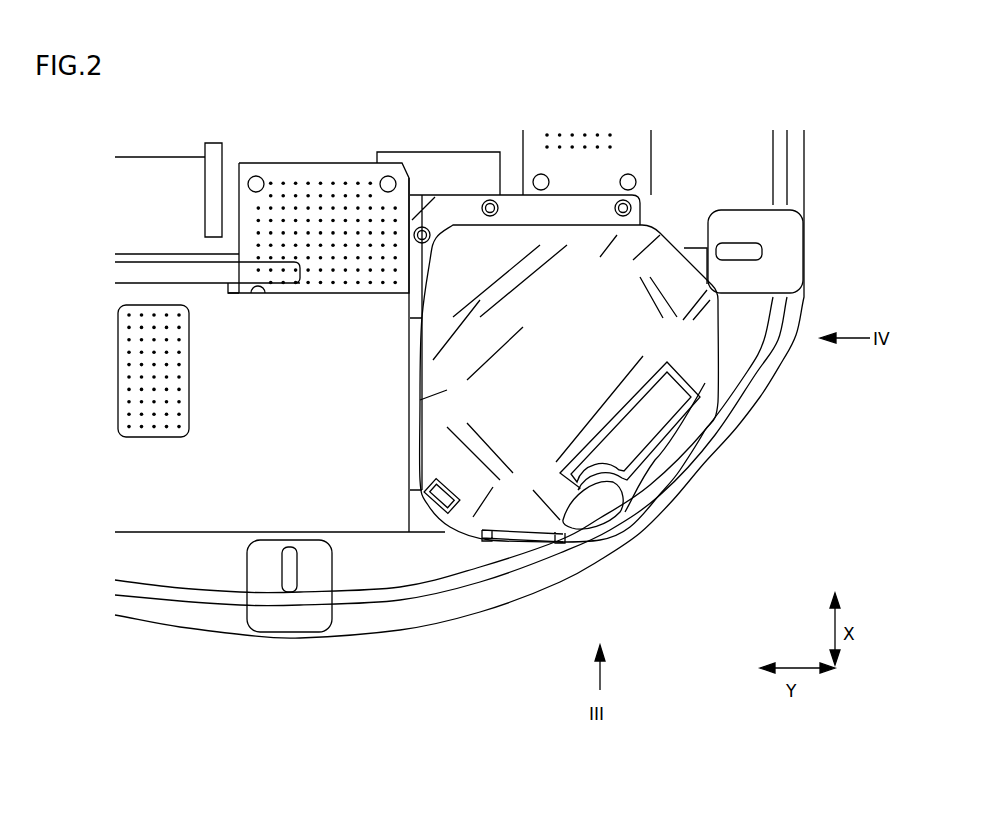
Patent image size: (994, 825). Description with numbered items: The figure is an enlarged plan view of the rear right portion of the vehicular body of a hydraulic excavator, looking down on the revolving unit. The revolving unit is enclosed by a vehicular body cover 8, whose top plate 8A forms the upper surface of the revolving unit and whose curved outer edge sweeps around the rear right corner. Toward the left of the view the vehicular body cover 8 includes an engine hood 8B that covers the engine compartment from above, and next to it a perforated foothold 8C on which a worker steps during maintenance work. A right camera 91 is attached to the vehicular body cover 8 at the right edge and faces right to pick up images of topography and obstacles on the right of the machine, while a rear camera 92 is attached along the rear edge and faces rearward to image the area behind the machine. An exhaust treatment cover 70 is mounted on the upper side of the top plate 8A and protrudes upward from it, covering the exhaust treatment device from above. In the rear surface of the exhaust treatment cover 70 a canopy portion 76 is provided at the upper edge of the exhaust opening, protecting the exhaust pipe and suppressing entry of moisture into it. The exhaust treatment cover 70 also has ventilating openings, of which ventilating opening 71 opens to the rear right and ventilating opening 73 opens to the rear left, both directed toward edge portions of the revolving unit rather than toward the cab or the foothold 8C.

The vehicular body cover 8 is at (193, 622).
The top plate 8A is at (375, 567).
The engine hood 8B is at (143, 482).
The foothold 8C is at (326, 186).
The exhaust treatment cover 70 is at (553, 292).
The ventilating opening 71 is at (648, 428).
The ventilating opening 73 is at (440, 505).
The canopy portion 76 is at (605, 513).
The right camera 91 is at (785, 252).
The rear camera 92 is at (291, 612).